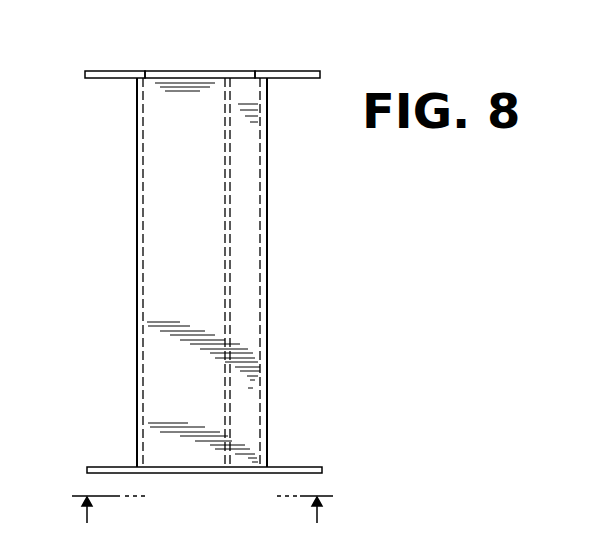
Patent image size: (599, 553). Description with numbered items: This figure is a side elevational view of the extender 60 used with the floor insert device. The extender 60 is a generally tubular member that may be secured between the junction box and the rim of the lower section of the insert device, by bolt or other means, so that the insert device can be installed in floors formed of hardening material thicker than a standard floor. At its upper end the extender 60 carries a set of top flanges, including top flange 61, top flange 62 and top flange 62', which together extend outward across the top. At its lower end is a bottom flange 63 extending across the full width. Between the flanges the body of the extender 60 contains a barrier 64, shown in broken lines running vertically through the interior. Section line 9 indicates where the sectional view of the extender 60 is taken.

The extender 60 is at (268, 146).
The top flange 61 is at (107, 70).
The top flange 62 is at (298, 58).
The top flange 62' is at (200, 101).
The bottom flange 63 is at (185, 475).
The barrier 64 is at (228, 277).
The section line 9- 9 is at (202, 524).